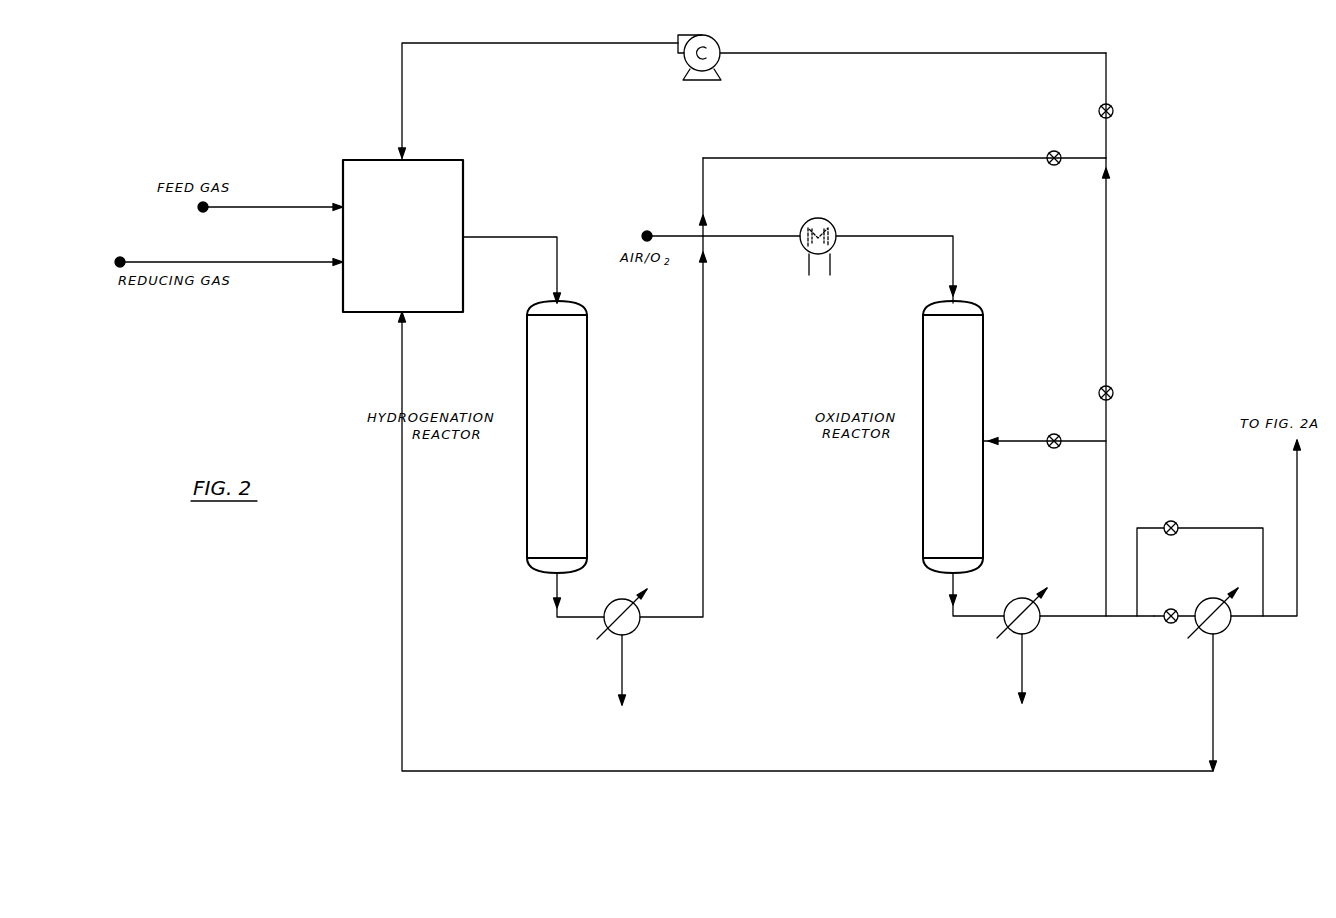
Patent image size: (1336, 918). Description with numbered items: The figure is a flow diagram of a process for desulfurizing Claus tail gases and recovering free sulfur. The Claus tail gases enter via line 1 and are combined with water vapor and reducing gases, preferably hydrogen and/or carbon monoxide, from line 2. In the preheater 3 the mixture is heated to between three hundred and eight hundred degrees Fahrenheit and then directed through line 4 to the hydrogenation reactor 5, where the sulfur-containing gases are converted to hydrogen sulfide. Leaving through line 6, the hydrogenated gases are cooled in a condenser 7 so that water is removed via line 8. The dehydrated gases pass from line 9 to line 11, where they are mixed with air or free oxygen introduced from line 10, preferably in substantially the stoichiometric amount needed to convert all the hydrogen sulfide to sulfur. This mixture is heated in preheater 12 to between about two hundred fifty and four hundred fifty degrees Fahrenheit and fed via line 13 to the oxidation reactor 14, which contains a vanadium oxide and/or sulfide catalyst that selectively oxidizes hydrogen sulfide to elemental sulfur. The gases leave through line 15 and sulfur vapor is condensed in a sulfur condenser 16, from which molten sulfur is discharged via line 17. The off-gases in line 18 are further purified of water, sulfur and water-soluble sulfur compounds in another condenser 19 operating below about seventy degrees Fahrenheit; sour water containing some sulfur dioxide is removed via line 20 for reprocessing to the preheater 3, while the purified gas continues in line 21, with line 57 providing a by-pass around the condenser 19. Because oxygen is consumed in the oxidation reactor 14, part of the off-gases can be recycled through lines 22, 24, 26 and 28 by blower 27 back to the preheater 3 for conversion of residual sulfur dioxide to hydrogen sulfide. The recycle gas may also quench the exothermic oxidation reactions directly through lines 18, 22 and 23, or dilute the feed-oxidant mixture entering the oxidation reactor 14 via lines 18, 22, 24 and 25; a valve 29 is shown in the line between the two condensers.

The line 1 is at (298, 207).
The line 2 is at (300, 266).
The preheater 3 is at (465, 201).
The line 4 is at (514, 237).
The hydrogenation reactor 5 is at (526, 468).
The line 6 is at (549, 590).
The condenser 7 is at (606, 603).
The line 8 is at (627, 729).
The line 9 is at (702, 468).
The line 10 is at (666, 236).
The line 11 is at (764, 236).
The preheater 12 is at (801, 250).
The line 13 is at (877, 236).
The oxidation reactor 14 is at (921, 493).
The line 15 is at (947, 591).
The sulfur condenser 16 is at (1010, 601).
The line 17 is at (1031, 729).
The line 18 is at (1065, 618).
The condenser 19 is at (1228, 620).
The line 20 is at (795, 771).
The line 21 is at (1298, 524).
The line 22 is at (1108, 484).
The line 23 is at (1022, 445).
The line 24 is at (1108, 218).
The line 25 is at (778, 158).
The line 26 is at (981, 53).
The blower 27 is at (716, 45).
The line 28 is at (536, 43).
The valve 29 is at (1160, 612).
The line 57 is at (1200, 528).